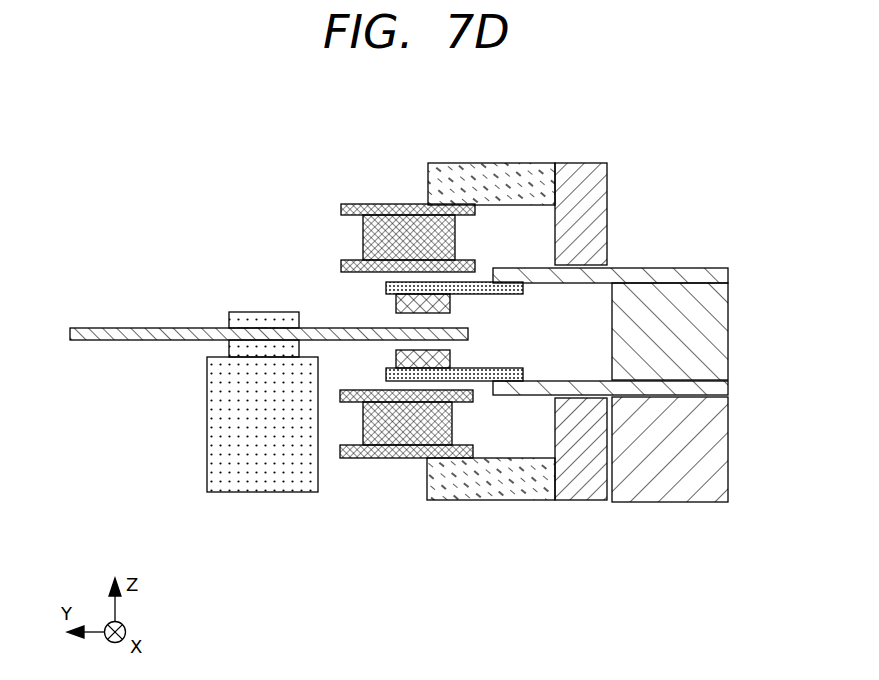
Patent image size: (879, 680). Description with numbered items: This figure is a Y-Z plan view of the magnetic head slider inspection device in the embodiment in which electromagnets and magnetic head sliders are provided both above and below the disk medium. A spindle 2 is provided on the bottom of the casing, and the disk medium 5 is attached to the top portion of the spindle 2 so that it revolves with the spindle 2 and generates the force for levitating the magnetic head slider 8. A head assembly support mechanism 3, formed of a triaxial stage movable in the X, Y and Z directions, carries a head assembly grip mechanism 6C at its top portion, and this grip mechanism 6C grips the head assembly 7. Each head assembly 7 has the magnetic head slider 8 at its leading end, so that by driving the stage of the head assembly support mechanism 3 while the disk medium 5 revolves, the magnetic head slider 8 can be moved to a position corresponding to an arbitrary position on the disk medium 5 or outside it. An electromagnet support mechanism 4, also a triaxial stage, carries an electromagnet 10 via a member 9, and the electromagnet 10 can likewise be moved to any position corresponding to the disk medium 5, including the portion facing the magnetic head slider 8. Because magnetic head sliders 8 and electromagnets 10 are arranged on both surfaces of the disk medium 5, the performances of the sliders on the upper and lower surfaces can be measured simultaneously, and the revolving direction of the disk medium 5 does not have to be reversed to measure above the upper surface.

The spindle 2 is at (217, 422).
The head assembly support mechanism 3 is at (718, 485).
The electromagnet support mechanism 4 is at (583, 172).
The disk medium 5 is at (83, 328).
The head assembly grip mechanism 6C is at (717, 280).
The head assembly 7 is at (490, 294).
The magnetic head slider 8 is at (395, 303).
The member 9 is at (495, 172).
The electromagnet 10 is at (397, 222).